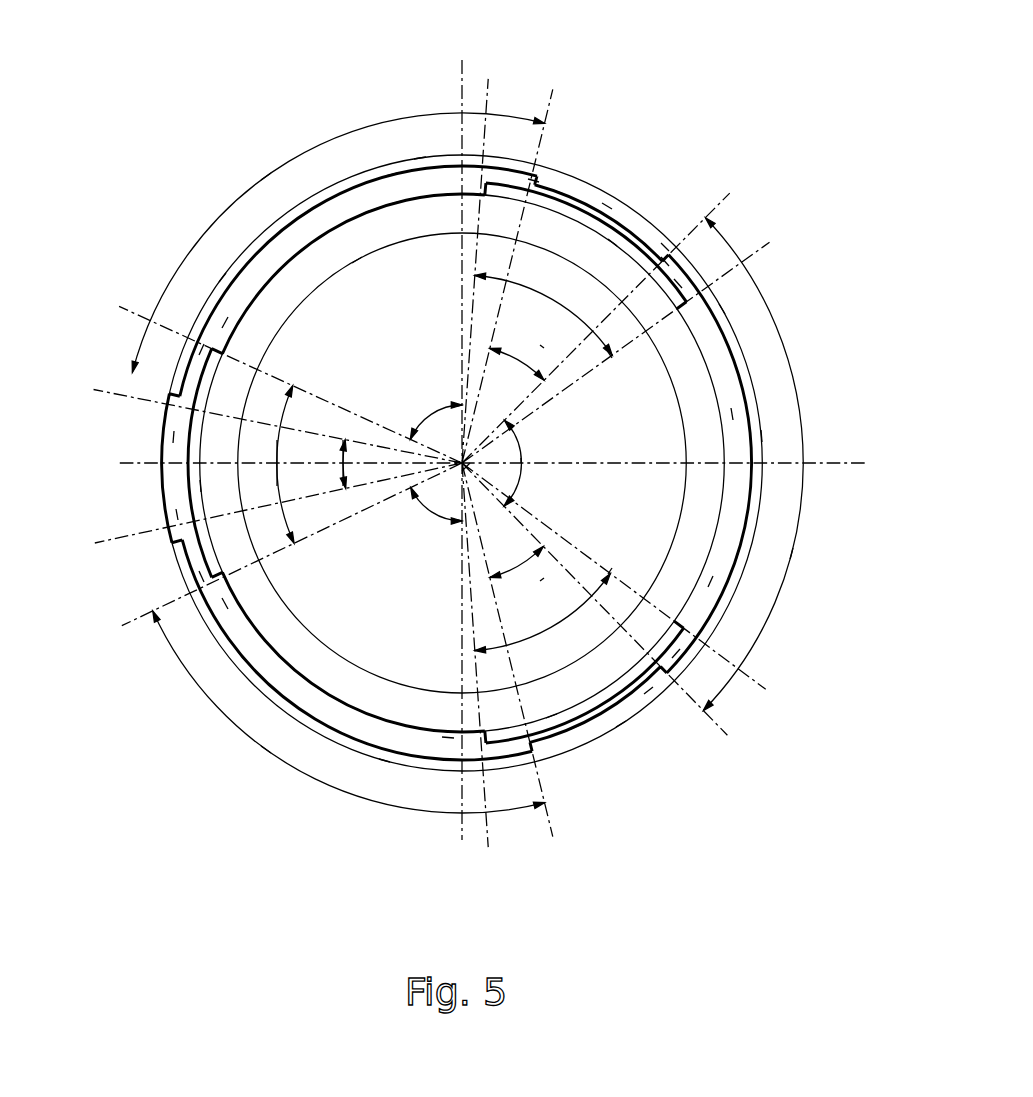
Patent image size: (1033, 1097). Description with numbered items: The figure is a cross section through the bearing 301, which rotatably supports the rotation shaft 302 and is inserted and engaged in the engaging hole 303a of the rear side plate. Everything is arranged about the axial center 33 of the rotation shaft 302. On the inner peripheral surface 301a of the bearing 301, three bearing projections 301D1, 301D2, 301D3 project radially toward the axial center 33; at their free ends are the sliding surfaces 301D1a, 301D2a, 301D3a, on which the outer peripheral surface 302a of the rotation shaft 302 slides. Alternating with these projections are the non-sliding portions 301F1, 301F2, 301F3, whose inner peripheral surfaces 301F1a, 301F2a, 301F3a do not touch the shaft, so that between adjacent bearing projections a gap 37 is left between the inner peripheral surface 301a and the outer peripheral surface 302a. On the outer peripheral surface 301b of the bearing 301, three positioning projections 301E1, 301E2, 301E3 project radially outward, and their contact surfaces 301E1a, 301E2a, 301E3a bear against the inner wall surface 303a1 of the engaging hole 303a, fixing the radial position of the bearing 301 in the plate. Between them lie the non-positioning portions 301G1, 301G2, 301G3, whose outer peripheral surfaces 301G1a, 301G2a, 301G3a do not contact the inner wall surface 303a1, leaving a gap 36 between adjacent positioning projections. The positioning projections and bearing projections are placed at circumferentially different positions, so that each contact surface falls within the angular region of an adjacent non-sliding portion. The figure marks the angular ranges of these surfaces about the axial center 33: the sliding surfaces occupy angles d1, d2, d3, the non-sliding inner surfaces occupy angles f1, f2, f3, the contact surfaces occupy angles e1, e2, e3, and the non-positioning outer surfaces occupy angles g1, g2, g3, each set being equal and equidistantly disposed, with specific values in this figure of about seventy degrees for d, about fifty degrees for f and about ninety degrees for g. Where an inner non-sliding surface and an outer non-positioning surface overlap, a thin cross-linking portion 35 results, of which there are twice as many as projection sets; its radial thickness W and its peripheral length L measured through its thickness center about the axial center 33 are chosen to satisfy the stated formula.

The bearing 301 is at (222, 278).
The inner peripheral surface 301a is at (264, 287).
The outer peripheral surface 301b is at (166, 410).
The bearing projection 301D1 is at (225, 322).
The sliding surface 301D1a is at (257, 253).
The bearing projection 301D2 is at (732, 414).
The sliding surface 301D2a is at (737, 371).
The bearing projection 301D3 is at (225, 604).
The sliding surface 301D3a is at (240, 654).
The positioning projection 301E1 is at (558, 192).
The contact surface 301E1a is at (586, 213).
The positioning projection 301E2 is at (621, 724).
The contact surface 301E2a is at (599, 706).
The positioning projection 301E3 is at (177, 515).
The contact surface 301E3a is at (174, 437).
The non-sliding portion 301F1 is at (607, 206).
The inner peripheral surface of non-sliding portion 301F1a is at (612, 243).
The non-sliding portion 301F2 is at (576, 726).
The inner peripheral surface of non-sliding portion 301F2a is at (552, 716).
The non-sliding portion 301F3 is at (188, 478).
The inner peripheral surface of non-sliding portion 301F3a is at (201, 486).
The non-positioning portion 301G1 is at (392, 175).
The outer peripheral surface of non-positioning portion 301G1a is at (420, 158).
The non-positioning portion 301G2 is at (724, 337).
The outer peripheral surface of non-positioning portion 301G2a is at (722, 309).
The non-positioning portion 301G3 is at (422, 757).
The outer peripheral surface of non-positioning portion 301G3a is at (384, 761).
The rotation shaft 302 is at (357, 260).
The outer peripheral surface of rotation shaft 302a is at (364, 214).
The engaging hole 303a is at (737, 555).
The inner wall surface 303a1 is at (710, 582).
The axial center 33 is at (466, 467).
The cross-linking portion 35 is at (533, 180).
The gap 36 is at (761, 436).
The gap 37 is at (648, 691).
The peripheral length of cross-linking portion L is at (665, 247).
The thickness of cross-linking portion W is at (665, 262).
The angle of non-positioning portion g1 is at (266, 176).
The angle of non-positioning portion g2 is at (792, 554).
The angle of non-positioning portion g3 is at (266, 750).
The angle of sliding surface d1 is at (437, 396).
The angle of sliding surface d2 is at (533, 451).
The angle of sliding surface d3 is at (437, 533).
The angle of contact surface e1 is at (529, 346).
The angle of contact surface e2 is at (530, 579).
The angle of contact surface e3 is at (331, 463).
The angle of non-sliding portion f1 is at (582, 320).
The angle of non-sliding portion f2 is at (582, 611).
The angle of non-sliding portion f3 is at (263, 463).